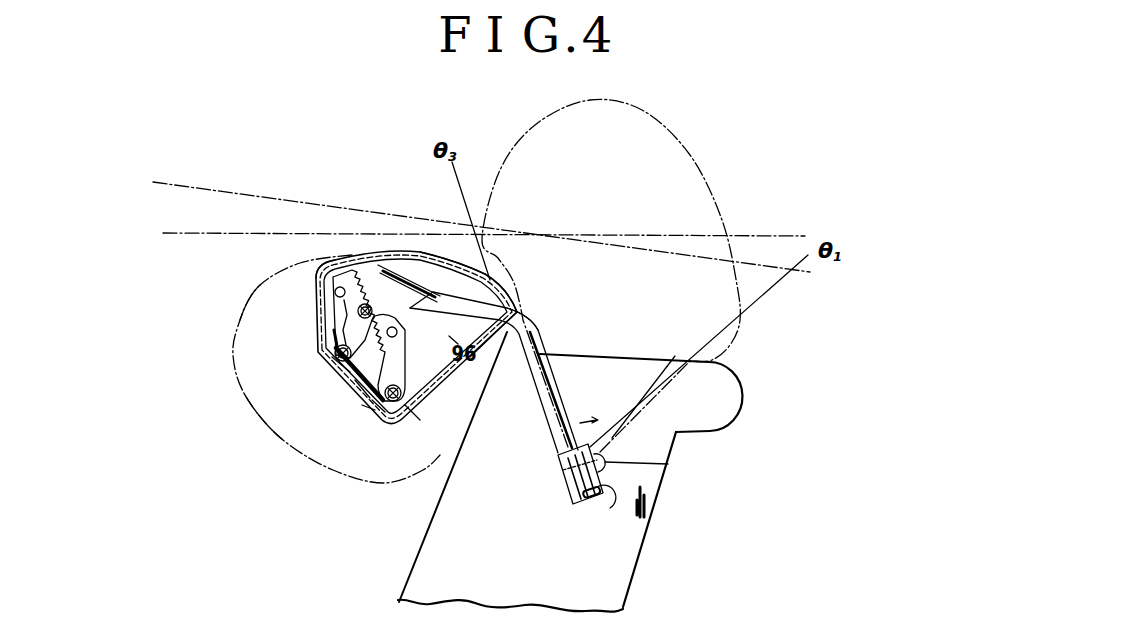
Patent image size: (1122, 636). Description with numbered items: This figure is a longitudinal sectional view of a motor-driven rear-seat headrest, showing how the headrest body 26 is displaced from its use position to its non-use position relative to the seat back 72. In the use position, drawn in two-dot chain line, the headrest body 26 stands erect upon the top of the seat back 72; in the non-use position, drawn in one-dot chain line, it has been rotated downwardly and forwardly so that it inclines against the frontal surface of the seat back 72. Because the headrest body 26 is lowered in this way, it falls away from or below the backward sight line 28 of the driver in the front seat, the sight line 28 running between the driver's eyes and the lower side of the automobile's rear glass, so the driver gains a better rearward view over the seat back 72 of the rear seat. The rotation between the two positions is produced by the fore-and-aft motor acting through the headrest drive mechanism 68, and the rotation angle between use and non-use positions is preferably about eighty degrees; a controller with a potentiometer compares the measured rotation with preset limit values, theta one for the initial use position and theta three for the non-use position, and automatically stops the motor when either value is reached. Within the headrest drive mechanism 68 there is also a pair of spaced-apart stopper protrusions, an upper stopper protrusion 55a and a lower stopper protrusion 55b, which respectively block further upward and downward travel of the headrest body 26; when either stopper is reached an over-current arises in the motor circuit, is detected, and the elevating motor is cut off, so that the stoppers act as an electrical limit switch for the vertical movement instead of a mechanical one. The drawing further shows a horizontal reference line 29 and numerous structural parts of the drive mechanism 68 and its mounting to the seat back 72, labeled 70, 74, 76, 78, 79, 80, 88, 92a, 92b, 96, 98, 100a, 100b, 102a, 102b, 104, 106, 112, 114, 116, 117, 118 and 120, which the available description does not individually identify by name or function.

The headrest body 26 is at (247, 292).
The backward sight line 28 is at (220, 192).
The horizontal reference line 29 is at (748, 236).
The upper stopper protrusion 55a is at (360, 385).
The lower stopper protrusion 55b is at (377, 405).
The headrest drive mechanism 68 is at (552, 293).
The seat back frame arm 70 is at (533, 322).
The seat back 72 is at (632, 585).
The bracket plate 74 is at (562, 477).
The bracket 76 is at (557, 458).
The pivot pin 78 is at (583, 505).
The pivot 79 is at (612, 505).
The upper bracket 80 is at (643, 472).
The pinion 88 is at (400, 320).
The first sector gear 92a is at (331, 330).
The second sector gear 92b is at (406, 367).
The housing flange 96 is at (318, 288).
The guide strip 98 is at (425, 289).
The first housing half 100a is at (348, 273).
The second housing half 100b is at (492, 290).
The first stopper 102a is at (348, 375).
The second stopper 102b is at (418, 420).
The bolt 104 is at (334, 352).
The shaft 106 is at (368, 412).
The link bar 112 is at (330, 312).
The spring 114 is at (322, 360).
The housing top 116 is at (463, 257).
The arm joint 117 is at (507, 357).
The seat cushion 118 is at (235, 351).
The cushion edge 120 is at (258, 402).